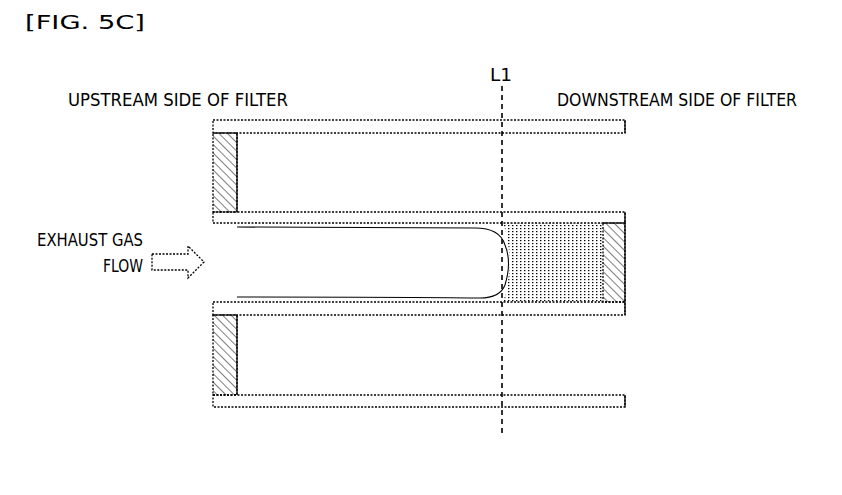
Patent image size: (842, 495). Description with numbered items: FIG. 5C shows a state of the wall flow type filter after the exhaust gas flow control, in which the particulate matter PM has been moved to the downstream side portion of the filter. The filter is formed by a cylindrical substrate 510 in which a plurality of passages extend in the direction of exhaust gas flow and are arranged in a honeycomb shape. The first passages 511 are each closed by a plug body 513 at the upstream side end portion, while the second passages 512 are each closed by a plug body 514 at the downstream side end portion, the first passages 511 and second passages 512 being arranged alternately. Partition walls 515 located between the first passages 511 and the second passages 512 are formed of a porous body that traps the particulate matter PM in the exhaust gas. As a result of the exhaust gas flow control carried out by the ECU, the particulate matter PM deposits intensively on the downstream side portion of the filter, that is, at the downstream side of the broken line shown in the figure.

The substrate 510 is at (575, 424).
The first passages 511 is at (612, 145).
The second passages 512 is at (215, 287).
The plug body 513 is at (213, 180).
The plug body 514 is at (627, 262).
The partition walls 515 is at (540, 212).
The particulate matter PM is at (547, 298).